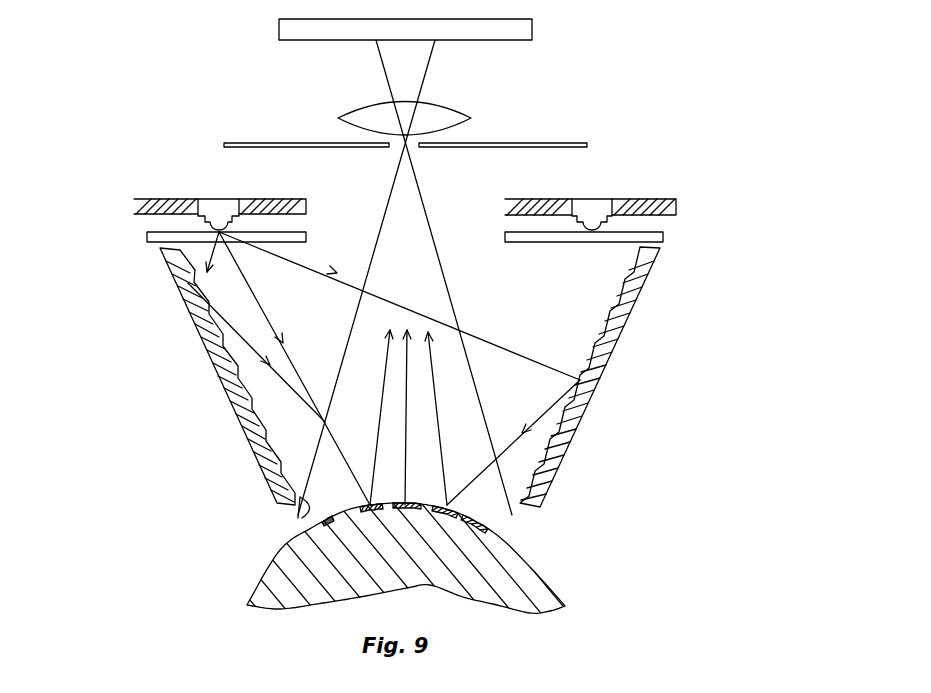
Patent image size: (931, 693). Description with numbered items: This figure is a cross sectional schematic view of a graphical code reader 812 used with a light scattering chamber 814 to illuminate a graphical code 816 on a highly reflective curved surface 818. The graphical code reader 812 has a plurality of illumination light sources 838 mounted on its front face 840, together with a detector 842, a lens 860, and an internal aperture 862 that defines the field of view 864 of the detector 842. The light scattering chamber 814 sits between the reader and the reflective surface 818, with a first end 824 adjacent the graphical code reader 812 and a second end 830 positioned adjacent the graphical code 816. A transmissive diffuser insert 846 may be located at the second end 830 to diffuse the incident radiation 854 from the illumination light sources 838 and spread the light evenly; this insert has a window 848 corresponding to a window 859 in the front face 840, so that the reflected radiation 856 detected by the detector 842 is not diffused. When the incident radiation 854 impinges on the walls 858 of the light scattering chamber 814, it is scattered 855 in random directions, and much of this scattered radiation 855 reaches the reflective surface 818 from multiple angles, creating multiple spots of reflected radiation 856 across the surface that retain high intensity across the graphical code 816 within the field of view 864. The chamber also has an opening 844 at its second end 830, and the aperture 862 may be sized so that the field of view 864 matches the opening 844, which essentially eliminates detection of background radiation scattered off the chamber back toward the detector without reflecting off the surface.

The graphical code reader 812 is at (720, 110).
The light scattering chamber 814 is at (627, 337).
The graphical code 816 is at (325, 538).
The reflective curved surface 818 is at (548, 567).
The first end 824 is at (655, 260).
The second end 830 is at (548, 498).
The illumination light sources 838 is at (215, 209).
The front face 840 is at (134, 205).
The detector 842 is at (533, 26).
The opening 844 is at (300, 512).
The transmissive diffuser insert 846 is at (150, 243).
The window 848 is at (340, 270).
The incident radiation 854 is at (345, 268).
The scattered radiation 855 is at (287, 385).
The reflected radiation 856 is at (432, 367).
The walls 858 is at (212, 338).
The window 859 is at (503, 205).
The lens 860 is at (452, 113).
The internal aperture 862 is at (414, 148).
The field of view 864 is at (444, 279).